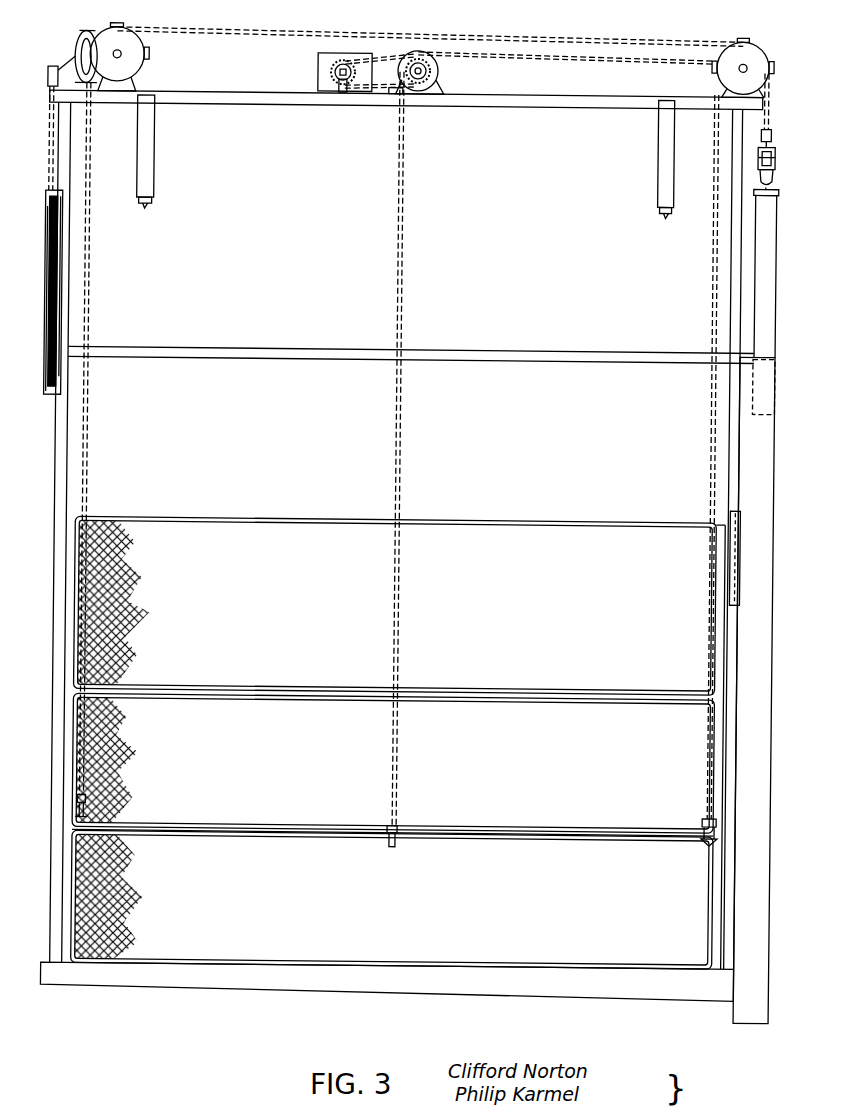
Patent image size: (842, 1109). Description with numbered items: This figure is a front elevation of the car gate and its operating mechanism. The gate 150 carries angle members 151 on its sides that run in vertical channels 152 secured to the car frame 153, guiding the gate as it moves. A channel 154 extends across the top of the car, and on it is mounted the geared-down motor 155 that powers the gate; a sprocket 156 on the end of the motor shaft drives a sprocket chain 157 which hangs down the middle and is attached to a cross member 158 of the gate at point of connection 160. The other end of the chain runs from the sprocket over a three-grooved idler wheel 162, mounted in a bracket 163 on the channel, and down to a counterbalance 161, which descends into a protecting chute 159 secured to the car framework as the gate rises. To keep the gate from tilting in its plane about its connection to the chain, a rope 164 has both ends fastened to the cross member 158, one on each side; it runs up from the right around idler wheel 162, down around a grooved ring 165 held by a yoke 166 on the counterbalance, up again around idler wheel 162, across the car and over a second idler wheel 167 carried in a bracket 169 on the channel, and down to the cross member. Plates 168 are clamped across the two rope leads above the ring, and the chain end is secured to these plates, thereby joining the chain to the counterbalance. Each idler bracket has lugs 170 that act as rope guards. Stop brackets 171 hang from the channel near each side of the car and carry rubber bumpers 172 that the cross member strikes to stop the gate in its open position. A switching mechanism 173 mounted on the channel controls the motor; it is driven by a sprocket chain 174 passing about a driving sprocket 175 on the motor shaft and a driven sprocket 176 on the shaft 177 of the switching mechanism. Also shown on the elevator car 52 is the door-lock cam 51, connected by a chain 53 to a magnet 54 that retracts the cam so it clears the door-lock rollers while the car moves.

The cam 51 is at (44, 292).
The elevator car 52 is at (245, 1001).
The chain 53 is at (48, 132).
The magnet 54 is at (88, 35).
The gate 150 is at (247, 520).
The angle members 151 is at (727, 556).
The vertical channels 152 is at (735, 496).
The car frame 153 is at (670, 360).
The channel 154 is at (532, 114).
The motor 155 is at (435, 74).
The sprocket 156 is at (414, 84).
The sprocket chain 157 is at (401, 167).
The cross member 158 is at (427, 832).
The protecting chute 159 is at (776, 353).
The point of connection 160 is at (392, 831).
The counterbalance 161 is at (772, 294).
The idler wheel 162 is at (757, 44).
The bracket 163 is at (717, 93).
The rope 164 is at (89, 469).
The grooved ring 165 is at (772, 147).
The yoke 166 is at (769, 172).
The idler wheel 167 is at (138, 71).
The plates 168 is at (769, 129).
The bracket 169 is at (113, 94).
The lugs 170 is at (145, 56).
The stop brackets 171 is at (154, 156).
The rubber bumpers 172 is at (139, 213).
The switching mechanism 173 is at (313, 69).
The sprocket chain 174 is at (374, 88).
The driving sprocket 175 is at (424, 80).
The driven sprocket 176 is at (329, 87).
The shaft 177 is at (338, 94).